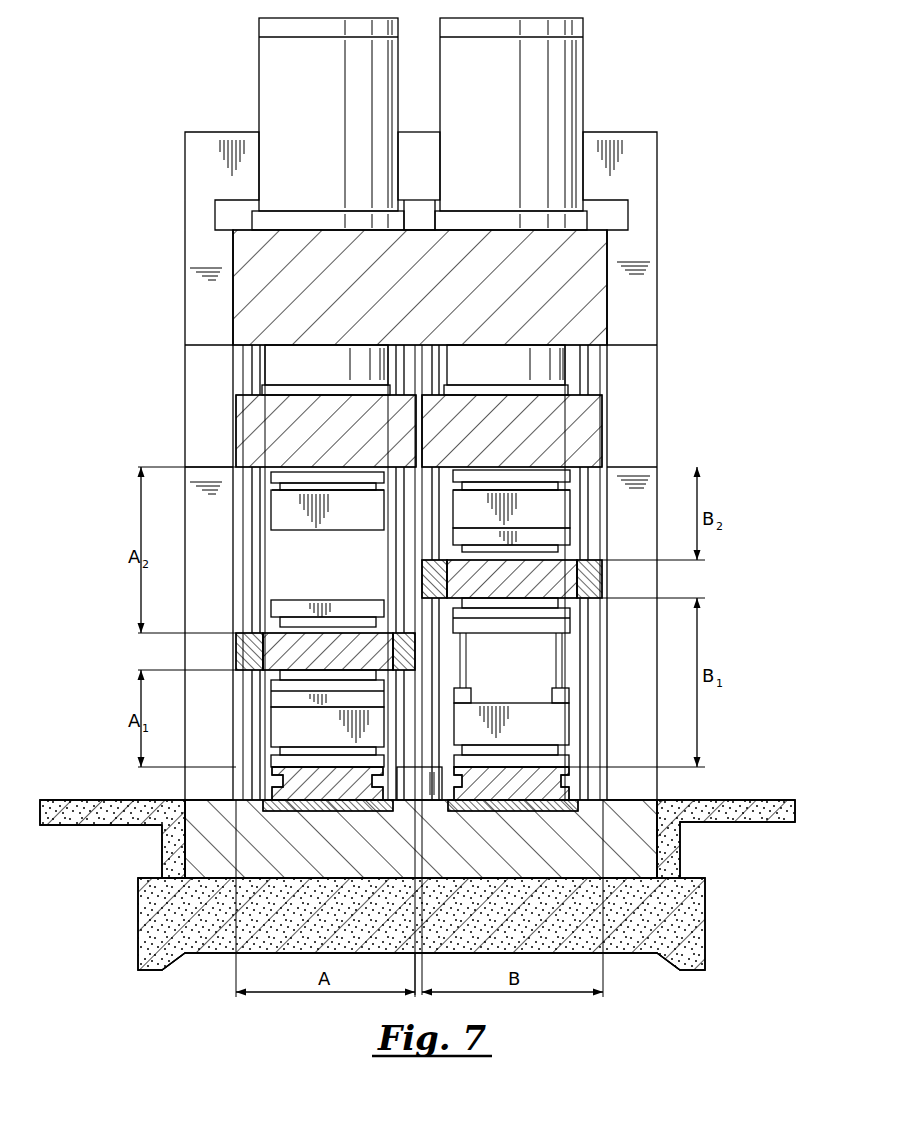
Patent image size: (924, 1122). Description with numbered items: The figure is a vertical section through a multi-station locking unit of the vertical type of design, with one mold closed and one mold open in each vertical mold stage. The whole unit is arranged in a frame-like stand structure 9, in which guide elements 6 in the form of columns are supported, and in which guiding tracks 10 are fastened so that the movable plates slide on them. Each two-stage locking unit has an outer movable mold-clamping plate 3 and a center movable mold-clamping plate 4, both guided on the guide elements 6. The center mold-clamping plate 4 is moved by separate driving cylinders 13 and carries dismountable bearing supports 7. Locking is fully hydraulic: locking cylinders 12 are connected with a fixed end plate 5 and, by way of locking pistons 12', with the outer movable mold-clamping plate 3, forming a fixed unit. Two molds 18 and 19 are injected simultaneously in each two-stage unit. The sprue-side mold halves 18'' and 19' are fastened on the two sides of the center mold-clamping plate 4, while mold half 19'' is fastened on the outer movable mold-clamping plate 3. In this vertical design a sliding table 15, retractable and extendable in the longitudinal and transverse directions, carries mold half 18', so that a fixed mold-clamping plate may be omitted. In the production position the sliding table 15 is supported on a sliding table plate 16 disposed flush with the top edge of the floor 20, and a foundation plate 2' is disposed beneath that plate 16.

The foundation plate 2' is at (436, 885).
The outer movable mold-clamping plate 3 is at (245, 418).
The center movable mold-clamping plate 4 is at (270, 633).
The fixed end plate 5 is at (612, 290).
The guide element 6 is at (243, 551).
The bearing support 7 is at (248, 654).
The frame-like stand structure 9 is at (200, 445).
The guiding track 10 is at (252, 522).
The locking cylinder 12 is at (420, 124).
The locking piston 12' is at (419, 370).
The driving cylinder 13 is at (470, 692).
The sliding table 15 is at (290, 782).
The sliding table plate 16 is at (265, 808).
The mold 18 is at (424, 724).
The mold half 18' is at (383, 652).
The mold half 18'' is at (431, 747).
The mold 19 is at (460, 500).
The mold half 19' is at (420, 577).
The mold half 19'' is at (419, 538).
The floor 20 is at (110, 800).